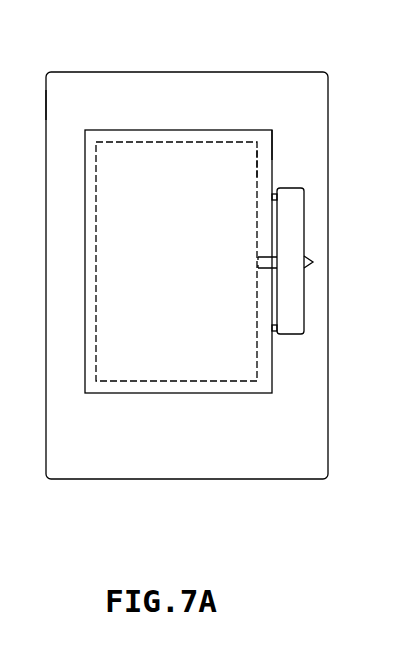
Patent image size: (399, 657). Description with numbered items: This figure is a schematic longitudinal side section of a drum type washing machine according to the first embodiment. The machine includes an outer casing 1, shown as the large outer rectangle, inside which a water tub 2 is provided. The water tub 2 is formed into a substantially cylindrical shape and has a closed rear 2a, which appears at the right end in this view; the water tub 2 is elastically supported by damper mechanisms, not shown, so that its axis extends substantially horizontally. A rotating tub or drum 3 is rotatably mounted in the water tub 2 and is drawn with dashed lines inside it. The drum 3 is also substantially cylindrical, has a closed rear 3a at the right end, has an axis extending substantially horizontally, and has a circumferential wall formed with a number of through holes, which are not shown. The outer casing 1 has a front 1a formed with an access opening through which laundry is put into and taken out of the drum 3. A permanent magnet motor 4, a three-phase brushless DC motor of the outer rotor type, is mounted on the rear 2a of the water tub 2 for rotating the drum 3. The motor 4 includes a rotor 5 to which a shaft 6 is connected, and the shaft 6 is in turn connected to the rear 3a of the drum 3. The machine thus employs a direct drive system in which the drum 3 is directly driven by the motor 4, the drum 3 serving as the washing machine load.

The outer casing 1 is at (200, 72).
The front 1a is at (46, 105).
The water tub 2 is at (173, 130).
The rear 2a is at (275, 138).
The drum 3 is at (130, 130).
The rear 3a is at (258, 164).
The permanent magnet motor 4 is at (306, 204).
The rotor 5 is at (298, 228).
The shaft 6 is at (313, 262).